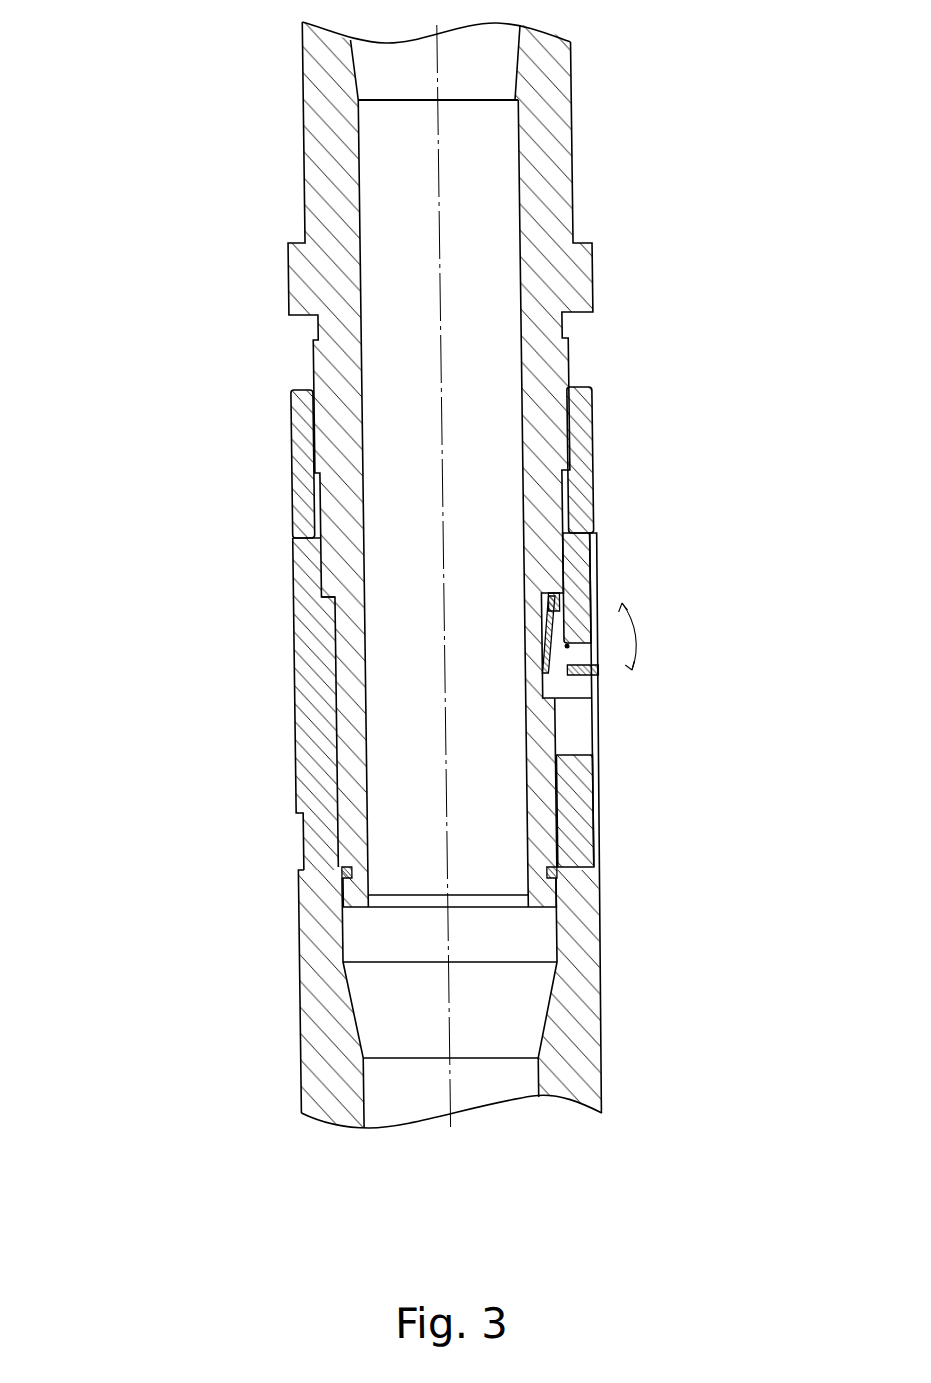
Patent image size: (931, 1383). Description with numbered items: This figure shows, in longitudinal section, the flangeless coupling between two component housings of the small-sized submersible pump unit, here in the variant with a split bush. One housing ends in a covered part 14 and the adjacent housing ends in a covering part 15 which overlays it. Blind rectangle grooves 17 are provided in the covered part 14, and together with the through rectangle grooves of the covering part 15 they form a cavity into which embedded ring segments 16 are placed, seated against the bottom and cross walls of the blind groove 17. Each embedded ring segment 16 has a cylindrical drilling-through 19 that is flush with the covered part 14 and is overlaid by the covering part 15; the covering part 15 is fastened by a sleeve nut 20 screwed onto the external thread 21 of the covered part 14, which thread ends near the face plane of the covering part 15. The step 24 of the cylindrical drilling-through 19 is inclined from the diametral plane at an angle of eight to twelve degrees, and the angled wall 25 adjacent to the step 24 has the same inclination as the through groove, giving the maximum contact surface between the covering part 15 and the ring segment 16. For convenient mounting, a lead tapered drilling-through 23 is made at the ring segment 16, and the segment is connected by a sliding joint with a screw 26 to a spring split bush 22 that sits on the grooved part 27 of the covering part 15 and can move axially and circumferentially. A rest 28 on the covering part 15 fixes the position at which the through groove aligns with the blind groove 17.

The covered part 14 is at (343, 770).
The covering part 15 is at (567, 1010).
The embedded ring segment 16 is at (583, 722).
The blind rectangle groove 17 is at (512, 677).
The cylindrical drilling-through 19 is at (588, 585).
The sleeve nut 20 is at (292, 473).
The external thread 21 is at (565, 370).
The spring split bush 22 is at (590, 790).
The lead tapered drilling-through 23 is at (585, 557).
The step 24 is at (592, 645).
The angled wall 25 is at (587, 637).
The screw 26 is at (592, 673).
The grooved part 27 is at (294, 845).
The rest 28 is at (323, 594).